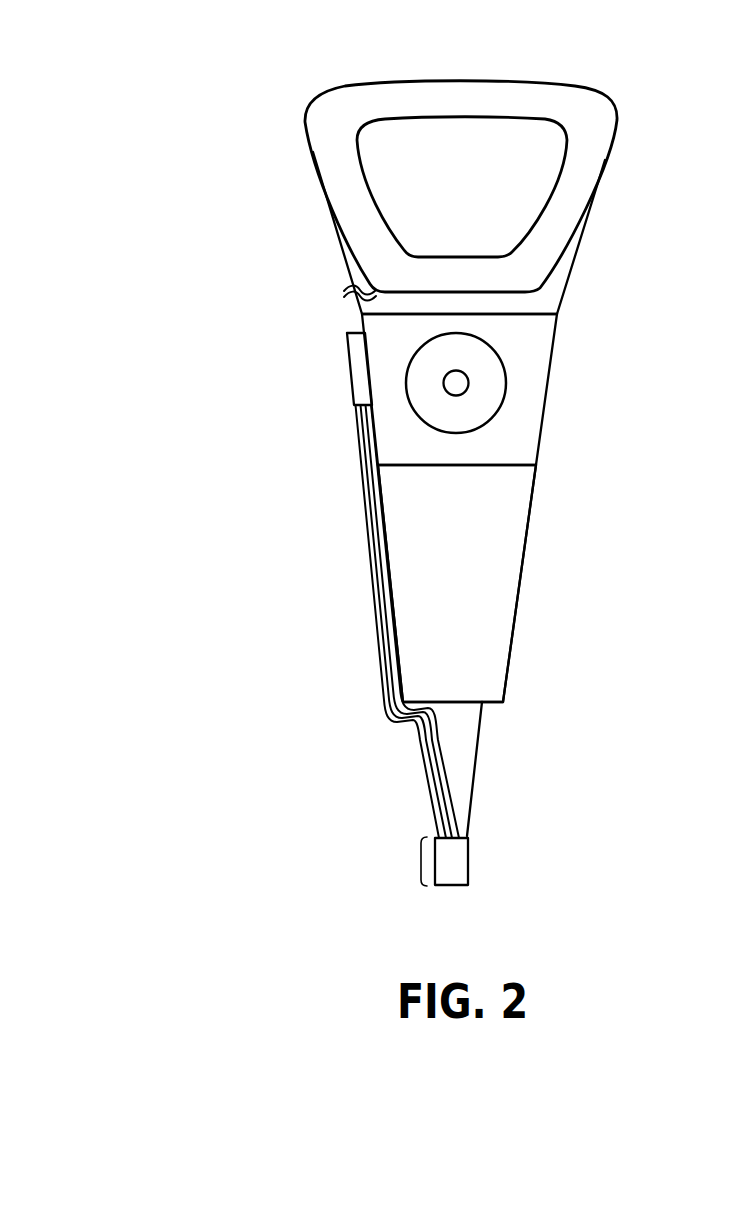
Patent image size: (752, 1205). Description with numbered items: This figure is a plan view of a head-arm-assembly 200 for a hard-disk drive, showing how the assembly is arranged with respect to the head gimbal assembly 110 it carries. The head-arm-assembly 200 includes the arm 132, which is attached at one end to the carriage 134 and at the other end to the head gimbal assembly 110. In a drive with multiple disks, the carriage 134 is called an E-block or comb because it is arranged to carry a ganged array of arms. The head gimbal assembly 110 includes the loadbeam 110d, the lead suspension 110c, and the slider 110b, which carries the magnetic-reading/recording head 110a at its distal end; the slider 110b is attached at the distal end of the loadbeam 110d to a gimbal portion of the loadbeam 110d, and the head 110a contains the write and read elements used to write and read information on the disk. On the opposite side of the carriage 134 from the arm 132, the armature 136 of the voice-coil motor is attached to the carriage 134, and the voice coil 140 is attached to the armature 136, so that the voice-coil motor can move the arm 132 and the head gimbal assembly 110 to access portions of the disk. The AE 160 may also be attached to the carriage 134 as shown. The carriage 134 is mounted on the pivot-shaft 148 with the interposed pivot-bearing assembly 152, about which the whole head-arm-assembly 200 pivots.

The handheld controller 200 is at (133, 70).
The voice coil 140 is at (360, 207).
The armature 136 is at (360, 267).
The AE 160 is at (358, 375).
The pivot-shaft 148 is at (456, 383).
The pivot-bearing assembly 152 is at (488, 395).
The carriage 134 is at (510, 433).
The arm 132 is at (452, 543).
The head gimbal assembly 110 is at (328, 645).
The magnetic-reading/recording head 110a is at (442, 875).
The slider 110b is at (420, 860).
The lead suspension 110c is at (432, 772).
The loadbeam 110d is at (452, 738).